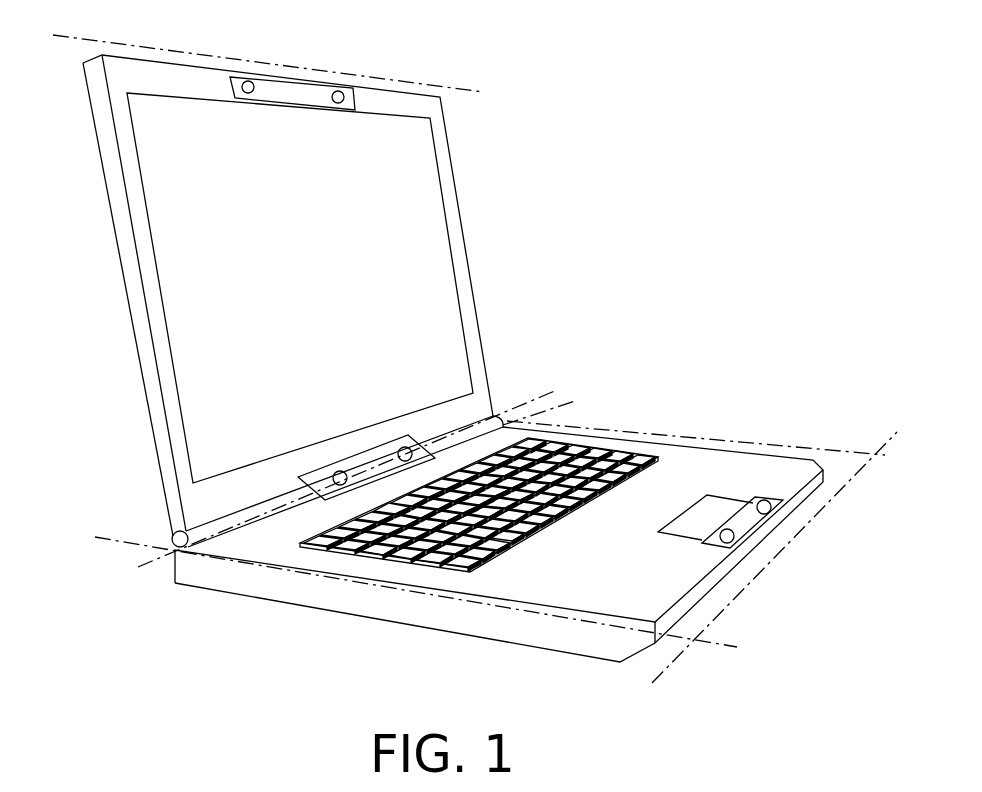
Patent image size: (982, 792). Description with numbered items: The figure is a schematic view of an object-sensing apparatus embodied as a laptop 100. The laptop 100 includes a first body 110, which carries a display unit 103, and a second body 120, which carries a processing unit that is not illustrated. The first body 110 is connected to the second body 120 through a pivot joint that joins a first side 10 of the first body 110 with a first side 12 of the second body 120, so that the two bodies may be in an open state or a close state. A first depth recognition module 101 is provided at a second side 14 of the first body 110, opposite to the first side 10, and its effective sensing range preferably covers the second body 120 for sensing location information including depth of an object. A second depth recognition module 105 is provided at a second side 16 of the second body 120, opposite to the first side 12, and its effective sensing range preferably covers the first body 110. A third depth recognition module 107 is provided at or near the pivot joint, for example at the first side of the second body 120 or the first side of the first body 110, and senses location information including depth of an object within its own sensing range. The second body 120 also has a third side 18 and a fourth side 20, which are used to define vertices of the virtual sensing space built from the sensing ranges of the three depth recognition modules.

The laptop 100 is at (471, 352).
The first body 110 is at (298, 280).
The second body 120 is at (500, 489).
The first depth recognition module 101 is at (318, 93).
The display unit 103 is at (175, 265).
The second depth recognition module 105 is at (745, 523).
The third depth recognition module 107 is at (392, 452).
The first side of the first body 10 is at (135, 538).
The first side of the second body 12 is at (148, 567).
The second side of the first body 14 is at (66, 35).
The second side of the second body 16 is at (691, 641).
The third side of the second body 18 is at (348, 587).
The fourth side of the second body 20 is at (682, 438).